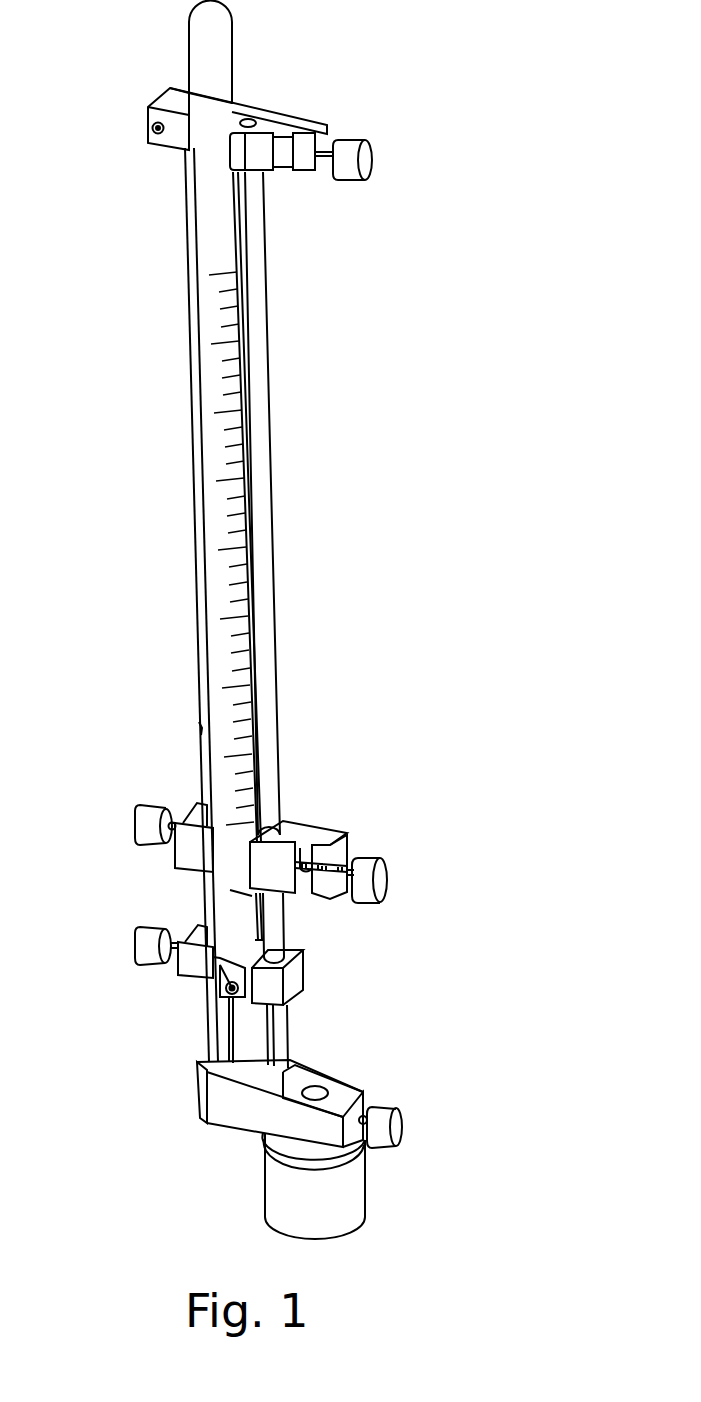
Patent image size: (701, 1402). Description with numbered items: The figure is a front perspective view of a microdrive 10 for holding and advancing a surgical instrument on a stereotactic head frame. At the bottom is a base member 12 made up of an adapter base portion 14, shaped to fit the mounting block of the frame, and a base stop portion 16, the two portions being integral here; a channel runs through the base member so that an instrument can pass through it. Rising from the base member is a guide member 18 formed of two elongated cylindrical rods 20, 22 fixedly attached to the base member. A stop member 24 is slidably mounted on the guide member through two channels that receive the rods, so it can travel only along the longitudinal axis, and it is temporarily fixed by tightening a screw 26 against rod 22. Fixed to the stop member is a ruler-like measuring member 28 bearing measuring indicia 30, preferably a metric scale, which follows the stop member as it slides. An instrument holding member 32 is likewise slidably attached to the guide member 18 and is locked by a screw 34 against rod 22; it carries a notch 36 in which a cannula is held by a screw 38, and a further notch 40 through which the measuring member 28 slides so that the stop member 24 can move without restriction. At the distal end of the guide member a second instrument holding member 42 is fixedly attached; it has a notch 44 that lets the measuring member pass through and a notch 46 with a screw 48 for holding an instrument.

The microdrive 10 is at (176, 270).
The base member 12 is at (375, 1183).
The adapter base portion 14 is at (350, 1235).
The base stop portion 16 is at (193, 1075).
The guide member 18 is at (282, 710).
The elongated cylindrical rod 20 is at (275, 582).
The elongated cylindrical rod 22 is at (195, 605).
The stop member 24 is at (312, 965).
The screw 26 is at (132, 943).
The measuring member 28 is at (200, 728).
The measuring indicia 30 is at (233, 345).
The instrument holding member 32 is at (327, 830).
The screw 34 is at (133, 813).
The notch 36 is at (313, 858).
The screw 38 is at (385, 860).
The notch 40 is at (207, 840).
The second instrument holding member 42 is at (285, 108).
The notch 44 is at (192, 130).
The notch 46 is at (297, 140).
The screw 48 is at (375, 143).